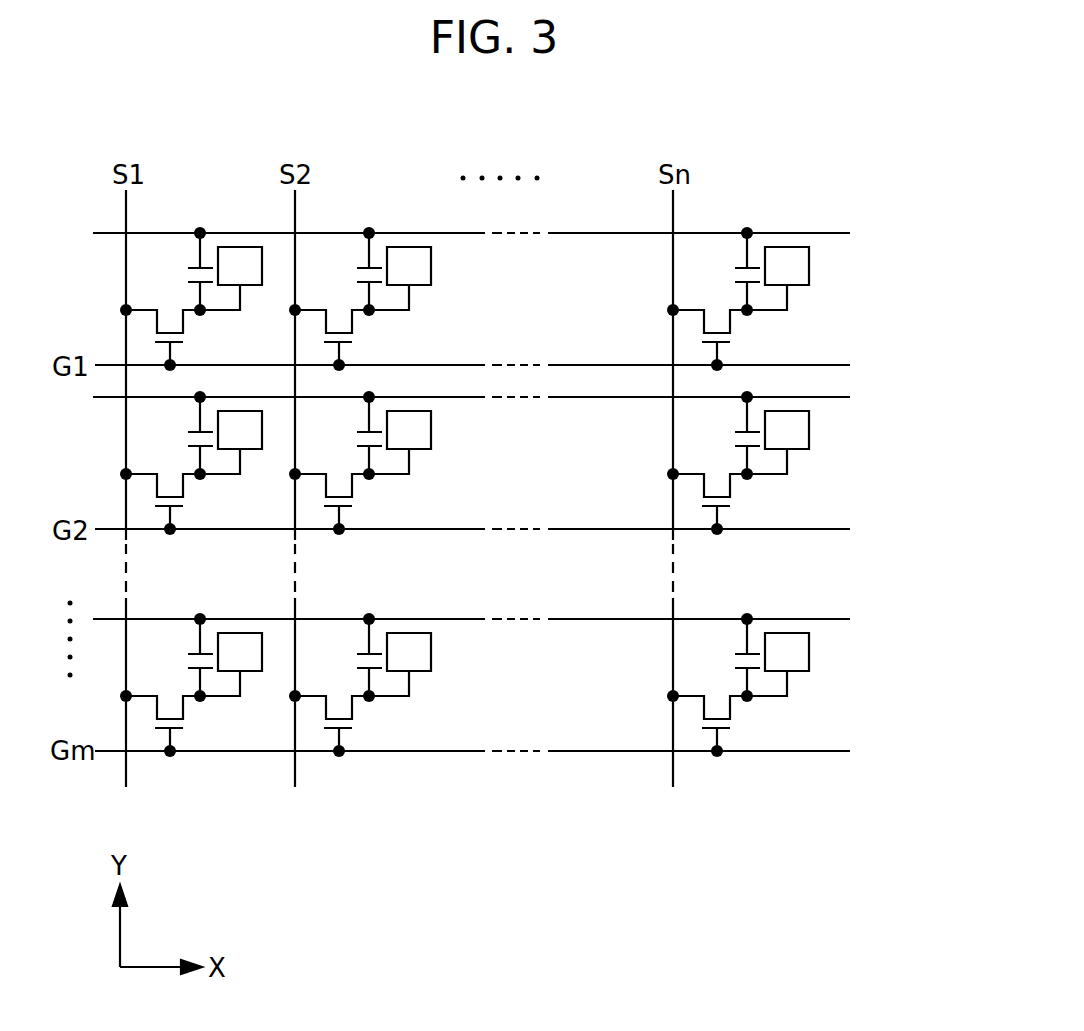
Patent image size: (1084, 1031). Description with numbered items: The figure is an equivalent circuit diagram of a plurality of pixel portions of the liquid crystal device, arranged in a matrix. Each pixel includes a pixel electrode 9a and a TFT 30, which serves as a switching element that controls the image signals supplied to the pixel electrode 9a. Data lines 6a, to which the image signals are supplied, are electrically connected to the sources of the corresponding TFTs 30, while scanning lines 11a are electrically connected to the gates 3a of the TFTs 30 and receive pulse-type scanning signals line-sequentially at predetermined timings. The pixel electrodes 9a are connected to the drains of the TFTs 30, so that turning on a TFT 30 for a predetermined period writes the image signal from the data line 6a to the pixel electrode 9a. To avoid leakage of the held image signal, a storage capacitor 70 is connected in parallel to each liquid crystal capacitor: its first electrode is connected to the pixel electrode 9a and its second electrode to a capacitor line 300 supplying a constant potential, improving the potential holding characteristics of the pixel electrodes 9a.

The data line 6a is at (126, 210).
The capacitor line 300 is at (833, 233).
The scanning line 11a is at (833, 365).
The storage capacitor 70 is at (187, 278).
The pixel electrode 9a is at (808, 278).
The TFT 30 is at (148, 325).
The gate 3a is at (728, 732).